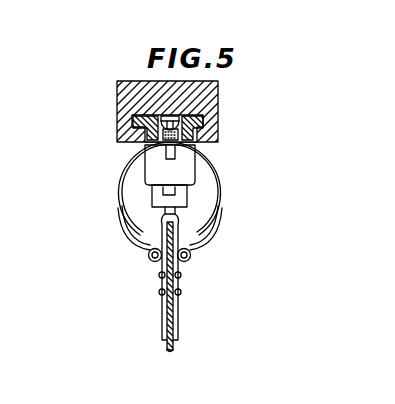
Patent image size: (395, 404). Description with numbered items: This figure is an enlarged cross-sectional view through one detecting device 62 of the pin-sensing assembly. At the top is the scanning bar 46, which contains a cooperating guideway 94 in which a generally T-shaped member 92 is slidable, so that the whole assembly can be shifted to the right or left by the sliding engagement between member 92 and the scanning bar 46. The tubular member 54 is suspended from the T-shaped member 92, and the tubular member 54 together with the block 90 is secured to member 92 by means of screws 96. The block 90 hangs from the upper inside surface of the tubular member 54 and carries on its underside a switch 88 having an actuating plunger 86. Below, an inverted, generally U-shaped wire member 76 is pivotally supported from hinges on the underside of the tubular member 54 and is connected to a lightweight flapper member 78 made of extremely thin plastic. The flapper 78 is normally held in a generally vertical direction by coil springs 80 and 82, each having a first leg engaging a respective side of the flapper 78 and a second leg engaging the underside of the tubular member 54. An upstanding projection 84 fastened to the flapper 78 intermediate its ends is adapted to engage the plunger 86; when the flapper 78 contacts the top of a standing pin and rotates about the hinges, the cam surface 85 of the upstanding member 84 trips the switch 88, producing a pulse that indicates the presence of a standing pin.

The scanning bar 46 is at (134, 82).
The screws 96 is at (180, 118).
The T-shaped member 92 is at (208, 118).
The guideway 94 is at (137, 130).
The tubular member 54 is at (120, 189).
The block 90 is at (183, 165).
The switch 88 is at (188, 191).
The actuating plunger 86 is at (181, 206).
The cam surface 85 is at (130, 228).
The upstanding projection 84 is at (217, 233).
The coil spring 80 is at (148, 256).
The wire member 76 is at (191, 255).
The coil spring 82 is at (188, 261).
The detecting device 62 is at (178, 307).
The flapper member 78 is at (168, 348).